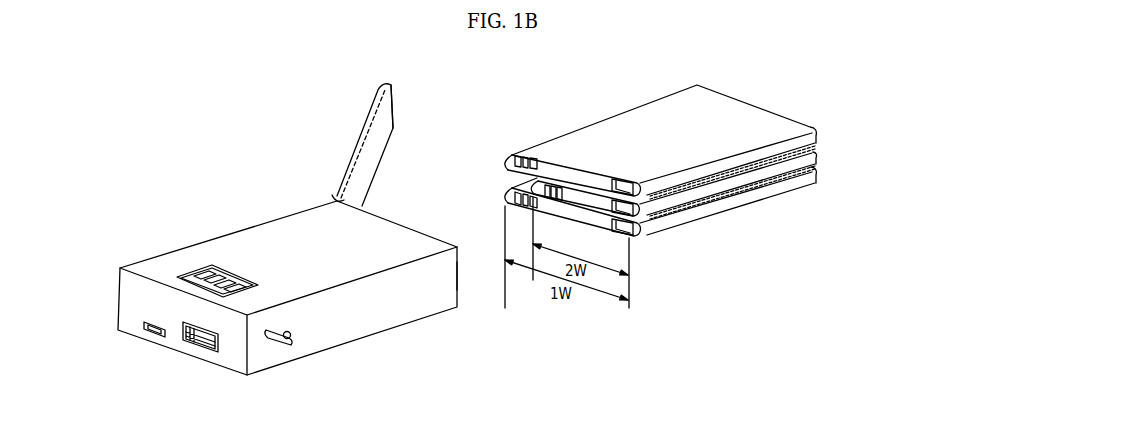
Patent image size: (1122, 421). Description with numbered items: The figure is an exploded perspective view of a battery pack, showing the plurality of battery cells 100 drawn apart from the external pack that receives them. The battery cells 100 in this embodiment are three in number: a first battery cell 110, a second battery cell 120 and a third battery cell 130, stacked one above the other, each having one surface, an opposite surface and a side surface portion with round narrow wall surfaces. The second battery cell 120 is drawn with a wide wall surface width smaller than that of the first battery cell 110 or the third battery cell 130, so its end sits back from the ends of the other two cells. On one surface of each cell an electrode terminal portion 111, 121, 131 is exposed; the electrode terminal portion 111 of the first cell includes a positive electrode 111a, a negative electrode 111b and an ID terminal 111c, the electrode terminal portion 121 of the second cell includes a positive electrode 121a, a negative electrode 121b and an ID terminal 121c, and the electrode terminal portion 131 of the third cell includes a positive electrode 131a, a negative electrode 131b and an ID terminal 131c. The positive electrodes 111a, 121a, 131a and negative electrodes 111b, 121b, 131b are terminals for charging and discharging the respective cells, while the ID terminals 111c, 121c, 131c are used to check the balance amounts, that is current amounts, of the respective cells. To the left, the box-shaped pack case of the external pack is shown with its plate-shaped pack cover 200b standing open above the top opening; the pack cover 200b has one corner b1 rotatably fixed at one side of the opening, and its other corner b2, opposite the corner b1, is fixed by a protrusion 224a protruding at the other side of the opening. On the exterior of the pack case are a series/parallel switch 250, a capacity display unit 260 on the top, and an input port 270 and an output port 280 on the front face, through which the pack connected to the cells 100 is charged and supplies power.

The battery cells 100 is at (664, 147).
The first battery cell 110 is at (639, 140).
The electrode terminal portion 111 is at (474, 155).
The positive electrode 111a is at (515, 150).
The negative electrode 111b is at (516, 166).
The ID terminal 111c is at (516, 160).
The second battery cell 120 is at (692, 132).
The electrode terminal portion 121 is at (563, 124).
The positive electrode 121a is at (548, 185).
The negative electrode 121b is at (560, 186).
The ID terminal 121c is at (554, 185).
The third battery cell 130 is at (639, 205).
The electrode terminal portion 131 is at (474, 215).
The positive electrode 131a is at (512, 192).
The negative electrode 131b is at (520, 210).
The ID terminal 131c is at (515, 203).
The pack cover 200b is at (370, 152).
The protrusion 224a is at (462, 276).
The series/parallel switch 250 is at (282, 345).
The capacity display unit 260 is at (200, 270).
The input port 270 is at (148, 337).
The output port 280 is at (200, 338).
The one corner b1 is at (337, 197).
The other corner b2 is at (393, 110).